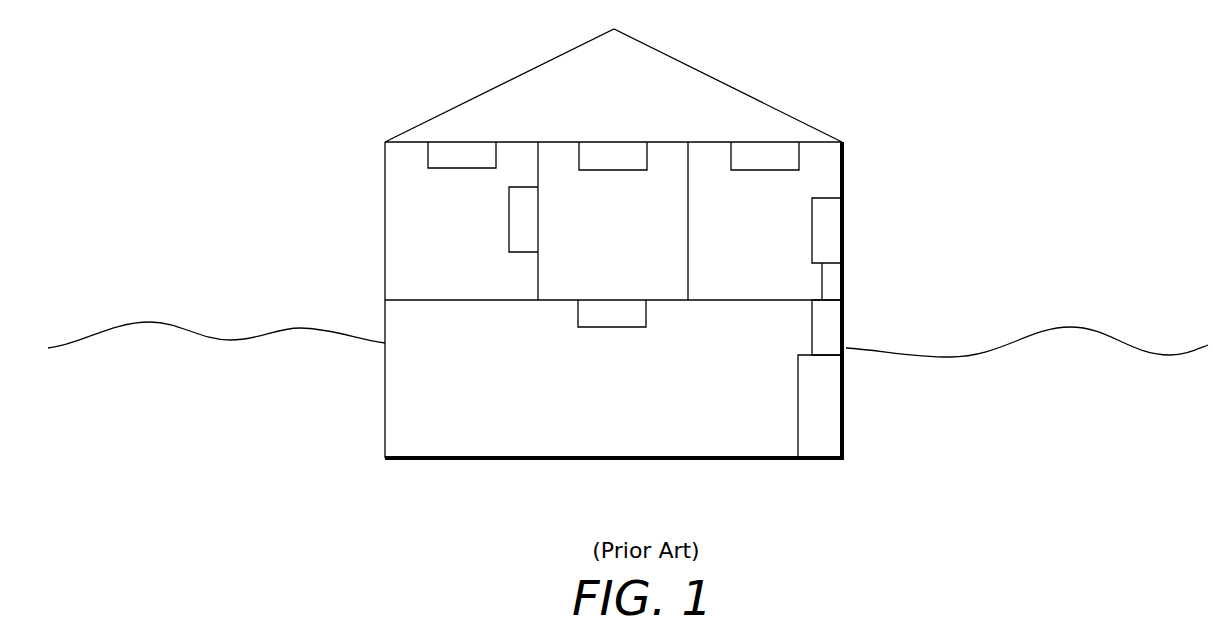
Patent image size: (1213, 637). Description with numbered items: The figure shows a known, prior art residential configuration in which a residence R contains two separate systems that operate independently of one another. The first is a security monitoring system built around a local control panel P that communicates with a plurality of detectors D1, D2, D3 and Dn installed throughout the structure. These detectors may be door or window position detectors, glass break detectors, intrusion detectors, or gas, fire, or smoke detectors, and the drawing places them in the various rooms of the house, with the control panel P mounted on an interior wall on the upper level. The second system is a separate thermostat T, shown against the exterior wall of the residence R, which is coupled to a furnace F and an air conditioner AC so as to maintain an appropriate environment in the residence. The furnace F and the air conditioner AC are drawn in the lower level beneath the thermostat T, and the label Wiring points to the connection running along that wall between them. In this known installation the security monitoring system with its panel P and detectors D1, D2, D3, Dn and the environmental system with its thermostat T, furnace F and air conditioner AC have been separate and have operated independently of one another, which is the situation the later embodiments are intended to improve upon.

The residence R is at (955, 70).
The detector D1 is at (460, 160).
The detector D2 is at (612, 160).
The detector D3 is at (763, 160).
The detector Dn is at (609, 318).
The local control panel P is at (528, 217).
The thermostat T is at (828, 228).
The air conditioner AC is at (828, 322).
The furnace F is at (812, 400).
The wiring Wiring is at (802, 326).